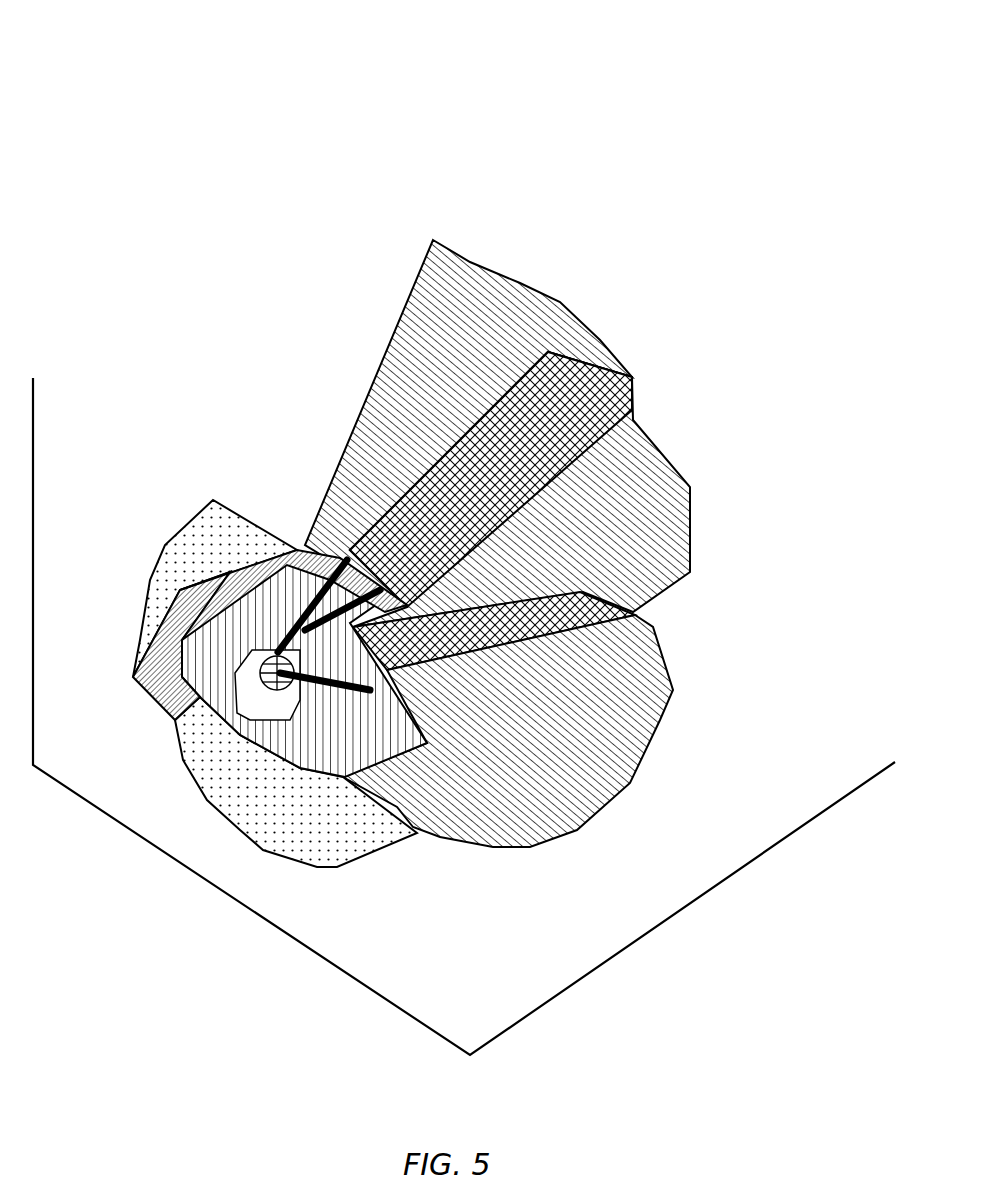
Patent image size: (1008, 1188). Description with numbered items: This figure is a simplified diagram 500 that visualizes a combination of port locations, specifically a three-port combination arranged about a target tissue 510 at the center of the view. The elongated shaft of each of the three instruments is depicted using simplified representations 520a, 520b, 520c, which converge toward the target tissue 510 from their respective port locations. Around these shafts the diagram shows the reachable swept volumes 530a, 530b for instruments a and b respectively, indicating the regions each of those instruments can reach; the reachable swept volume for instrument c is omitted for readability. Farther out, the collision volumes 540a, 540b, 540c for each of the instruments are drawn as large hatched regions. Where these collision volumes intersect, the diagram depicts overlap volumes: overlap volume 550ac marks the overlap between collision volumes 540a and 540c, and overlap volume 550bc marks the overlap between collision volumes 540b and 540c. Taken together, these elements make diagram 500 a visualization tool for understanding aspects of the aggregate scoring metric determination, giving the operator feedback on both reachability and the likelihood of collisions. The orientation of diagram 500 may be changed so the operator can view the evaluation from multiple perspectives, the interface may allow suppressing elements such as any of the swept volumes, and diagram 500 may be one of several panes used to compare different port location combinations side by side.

The diagram 500 is at (106, 62).
The target tissue 510 is at (235, 713).
The simplified representation of elongated shaft of instrument a 520a is at (415, 840).
The simplified representation of elongated shaft of instrument b 520b is at (298, 548).
The simplified representation of elongated shaft of instrument c 520c is at (235, 570).
The reachable swept volume 530a is at (208, 535).
The reachable swept volume 530b is at (334, 815).
The collision volume 540a is at (660, 680).
The collision volume 540b is at (505, 280).
The collision volume 540c is at (672, 450).
The overlap volume 550ac is at (620, 605).
The overlap volume 550bc is at (603, 352).